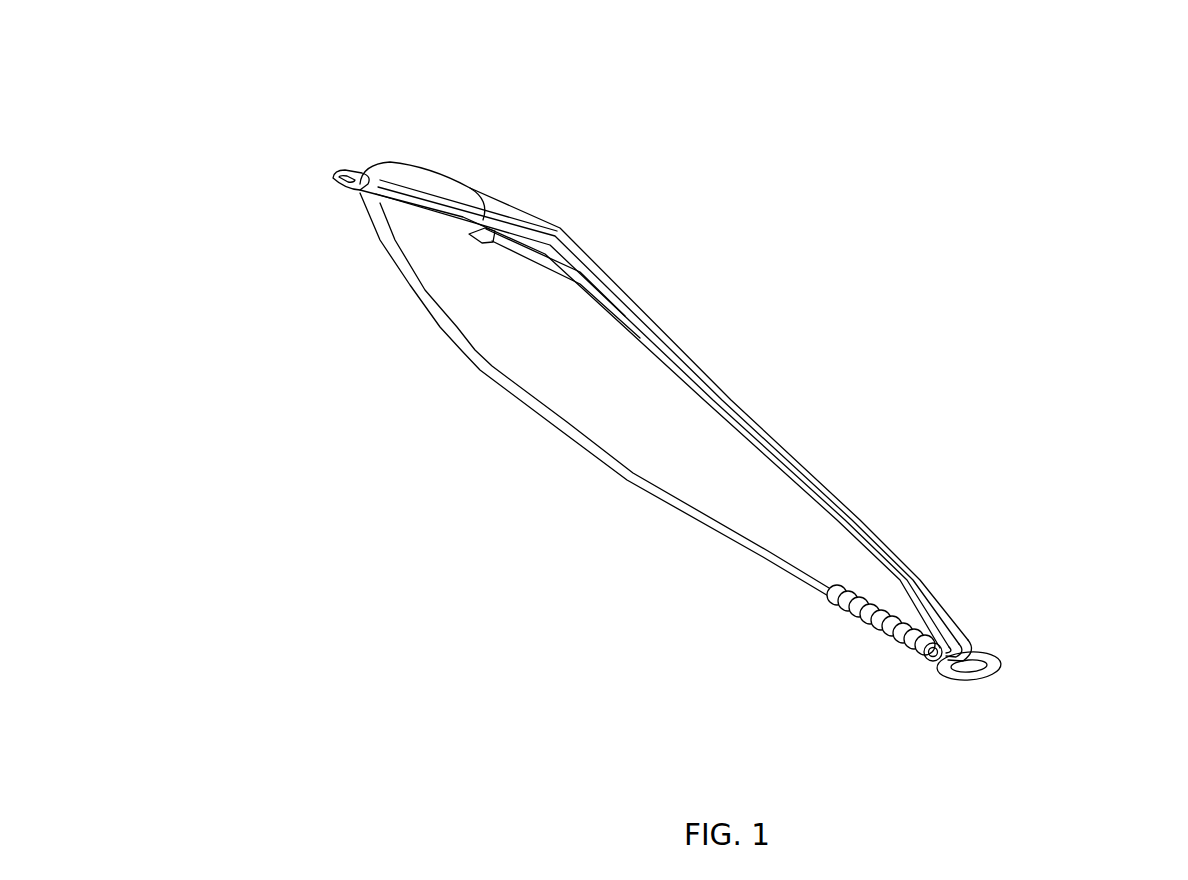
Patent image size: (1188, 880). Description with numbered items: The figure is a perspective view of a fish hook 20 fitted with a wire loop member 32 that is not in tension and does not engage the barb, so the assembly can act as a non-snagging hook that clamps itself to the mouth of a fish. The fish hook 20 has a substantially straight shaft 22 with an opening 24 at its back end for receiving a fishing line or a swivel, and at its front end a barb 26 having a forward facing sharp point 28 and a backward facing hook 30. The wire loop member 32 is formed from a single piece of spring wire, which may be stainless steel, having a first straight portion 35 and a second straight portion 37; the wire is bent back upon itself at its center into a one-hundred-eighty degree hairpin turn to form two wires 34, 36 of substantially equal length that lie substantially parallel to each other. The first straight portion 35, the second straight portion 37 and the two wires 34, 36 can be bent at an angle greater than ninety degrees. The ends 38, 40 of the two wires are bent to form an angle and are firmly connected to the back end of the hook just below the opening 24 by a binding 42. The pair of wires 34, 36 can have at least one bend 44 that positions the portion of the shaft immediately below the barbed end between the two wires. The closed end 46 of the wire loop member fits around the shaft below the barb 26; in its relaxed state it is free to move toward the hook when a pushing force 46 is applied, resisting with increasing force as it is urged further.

The fish hook 20 is at (1047, 157).
The shaft 22 is at (557, 432).
The opening 24 is at (1000, 671).
The barb 26 is at (540, 268).
The sharp point 28 is at (590, 300).
The hook 30 is at (487, 242).
The wire loop member 32 is at (880, 546).
The wire 34 is at (663, 332).
The first straight portion 35 is at (775, 430).
The wire 36 is at (690, 392).
The second straight portion 37 is at (433, 165).
The end 38 is at (950, 617).
The end 40 is at (963, 628).
The binding 42 is at (860, 627).
The bend 44 is at (537, 222).
The closed end 46 is at (341, 168).